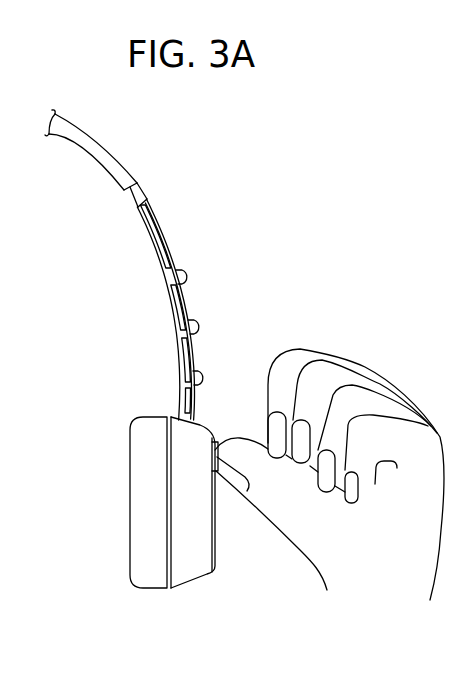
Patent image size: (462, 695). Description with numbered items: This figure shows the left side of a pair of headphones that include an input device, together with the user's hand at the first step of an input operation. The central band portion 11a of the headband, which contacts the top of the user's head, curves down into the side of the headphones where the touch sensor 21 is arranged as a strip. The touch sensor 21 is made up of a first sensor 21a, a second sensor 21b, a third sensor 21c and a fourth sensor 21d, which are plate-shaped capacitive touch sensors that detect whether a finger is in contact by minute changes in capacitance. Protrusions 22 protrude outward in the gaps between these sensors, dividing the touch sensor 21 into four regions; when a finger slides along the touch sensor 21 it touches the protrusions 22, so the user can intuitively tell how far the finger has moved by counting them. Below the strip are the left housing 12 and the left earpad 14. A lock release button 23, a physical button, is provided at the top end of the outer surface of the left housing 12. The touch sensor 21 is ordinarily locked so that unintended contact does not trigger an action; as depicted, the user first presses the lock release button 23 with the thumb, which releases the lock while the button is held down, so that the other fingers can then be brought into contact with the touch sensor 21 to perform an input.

The central band portion 11a is at (121, 171).
The touch sensor 21 is at (124, 309).
The first sensor 21a is at (159, 249).
The second sensor 21b is at (182, 303).
The third sensor 21c is at (182, 350).
The fourth sensor 21d is at (149, 394).
The protrusion 22 is at (195, 273).
The lock release button 23 is at (217, 472).
The left housing 12 is at (197, 577).
The left earpad 14 is at (150, 589).